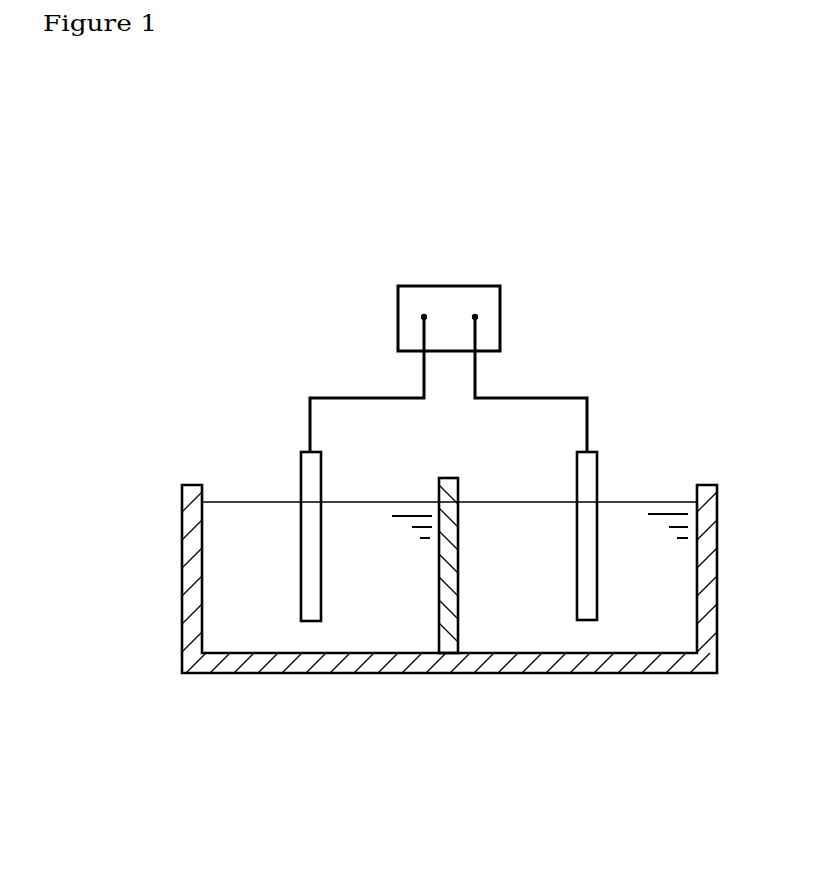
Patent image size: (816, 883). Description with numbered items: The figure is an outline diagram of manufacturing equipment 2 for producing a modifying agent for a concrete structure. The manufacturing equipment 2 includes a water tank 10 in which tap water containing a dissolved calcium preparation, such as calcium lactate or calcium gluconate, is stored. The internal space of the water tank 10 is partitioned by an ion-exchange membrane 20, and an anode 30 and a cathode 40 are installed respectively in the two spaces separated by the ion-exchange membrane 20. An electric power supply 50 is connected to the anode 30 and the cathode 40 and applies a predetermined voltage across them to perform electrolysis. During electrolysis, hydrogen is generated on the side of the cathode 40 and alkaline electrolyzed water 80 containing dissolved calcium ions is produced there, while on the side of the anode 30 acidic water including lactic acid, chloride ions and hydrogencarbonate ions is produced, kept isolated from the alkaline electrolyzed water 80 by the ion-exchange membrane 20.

The manufacturing equipment 2 is at (263, 168).
The water tank 10 is at (352, 668).
The ion-exchange membrane 20 is at (449, 643).
The anode 30 is at (590, 470).
The cathode 40 is at (310, 467).
The electric power supply 50 is at (451, 300).
The alkaline electrolyzed water 80 is at (237, 639).